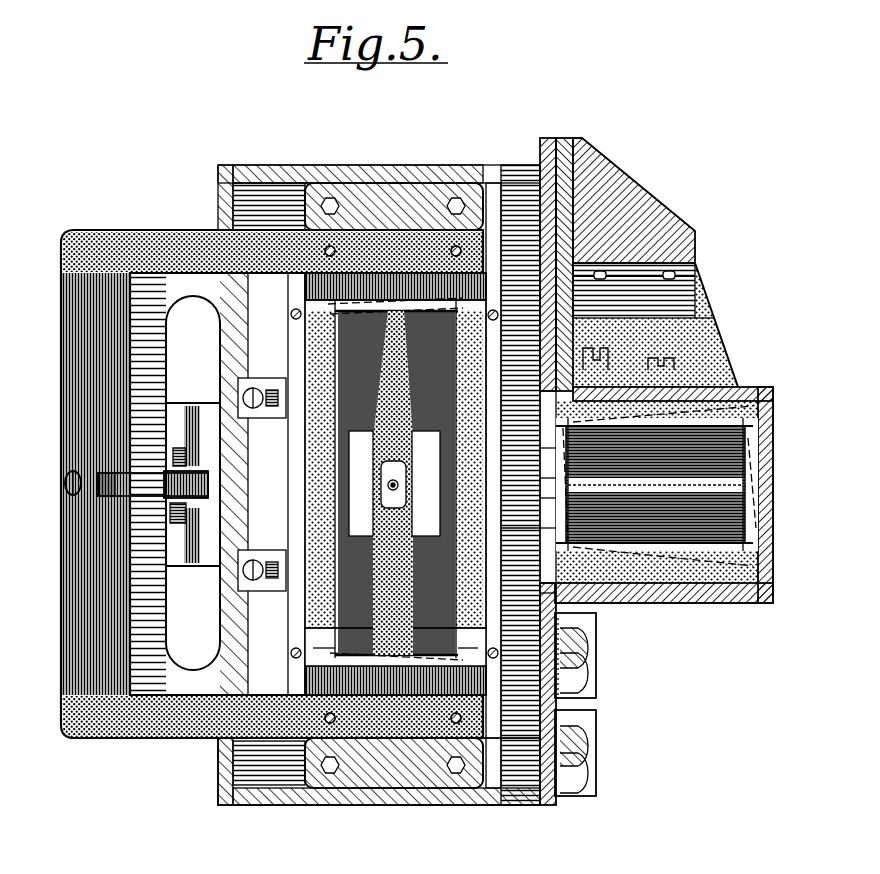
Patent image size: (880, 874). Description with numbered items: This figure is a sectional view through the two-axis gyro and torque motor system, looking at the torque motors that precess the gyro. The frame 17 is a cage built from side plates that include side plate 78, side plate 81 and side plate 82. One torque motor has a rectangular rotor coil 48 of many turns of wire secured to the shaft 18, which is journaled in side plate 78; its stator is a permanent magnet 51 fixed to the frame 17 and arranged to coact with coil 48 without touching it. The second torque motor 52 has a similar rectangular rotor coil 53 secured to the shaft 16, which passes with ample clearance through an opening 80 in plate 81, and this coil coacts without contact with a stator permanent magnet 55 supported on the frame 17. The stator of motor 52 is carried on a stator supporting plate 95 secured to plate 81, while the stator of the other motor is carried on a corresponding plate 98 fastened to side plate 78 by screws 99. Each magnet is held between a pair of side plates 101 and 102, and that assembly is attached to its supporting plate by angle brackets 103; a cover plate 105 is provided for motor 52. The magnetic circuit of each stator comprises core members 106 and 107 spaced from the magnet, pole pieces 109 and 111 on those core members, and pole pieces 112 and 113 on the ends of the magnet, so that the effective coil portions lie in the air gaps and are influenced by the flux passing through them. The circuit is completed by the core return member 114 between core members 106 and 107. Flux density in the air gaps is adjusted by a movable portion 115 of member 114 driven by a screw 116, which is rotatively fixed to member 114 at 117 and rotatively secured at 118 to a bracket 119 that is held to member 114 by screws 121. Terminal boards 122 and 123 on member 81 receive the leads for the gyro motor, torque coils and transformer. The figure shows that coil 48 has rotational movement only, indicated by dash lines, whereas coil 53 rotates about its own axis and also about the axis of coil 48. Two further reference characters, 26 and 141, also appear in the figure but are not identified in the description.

The shaft 16 is at (534, 486).
The frame 17 is at (505, 799).
The shaft 18 is at (392, 474).
The top plate 26 is at (375, 166).
The rotor coil 48 is at (428, 358).
The permanent magnet 51 is at (464, 484).
The torque motor 52 is at (705, 293).
The rotor coil 53 is at (748, 485).
The permanent magnet 55 is at (657, 574).
The side plate 78 is at (520, 538).
The opening 80 is at (534, 578).
The side plate 81 is at (534, 150).
The side plate 82 is at (213, 770).
The stator supporting plate 95 is at (558, 140).
The stator supporting plate 98 is at (254, 331).
The screws 99 is at (439, 198).
The side plate 101 is at (241, 482).
The side plate 102 is at (494, 419).
The angle brackets 103 is at (258, 372).
The cover plate 105 is at (766, 517).
The core member 106 is at (166, 242).
The core member 107 is at (174, 722).
The pole piece 109 is at (373, 280).
The pole piece 111 is at (297, 668).
The pole piece 112 is at (306, 320).
The pole piece 113 is at (298, 624).
The core return member 114 is at (102, 678).
The movable portion 115 is at (140, 462).
The screw 116 is at (180, 452).
The rotative fixing 117 is at (60, 468).
The rotative securing 118 is at (201, 478).
The bracket 119 is at (181, 505).
The screws 121 is at (174, 432).
The terminal board 122 is at (590, 738).
The terminal board 123 is at (590, 658).
The strip 141 is at (405, 790).